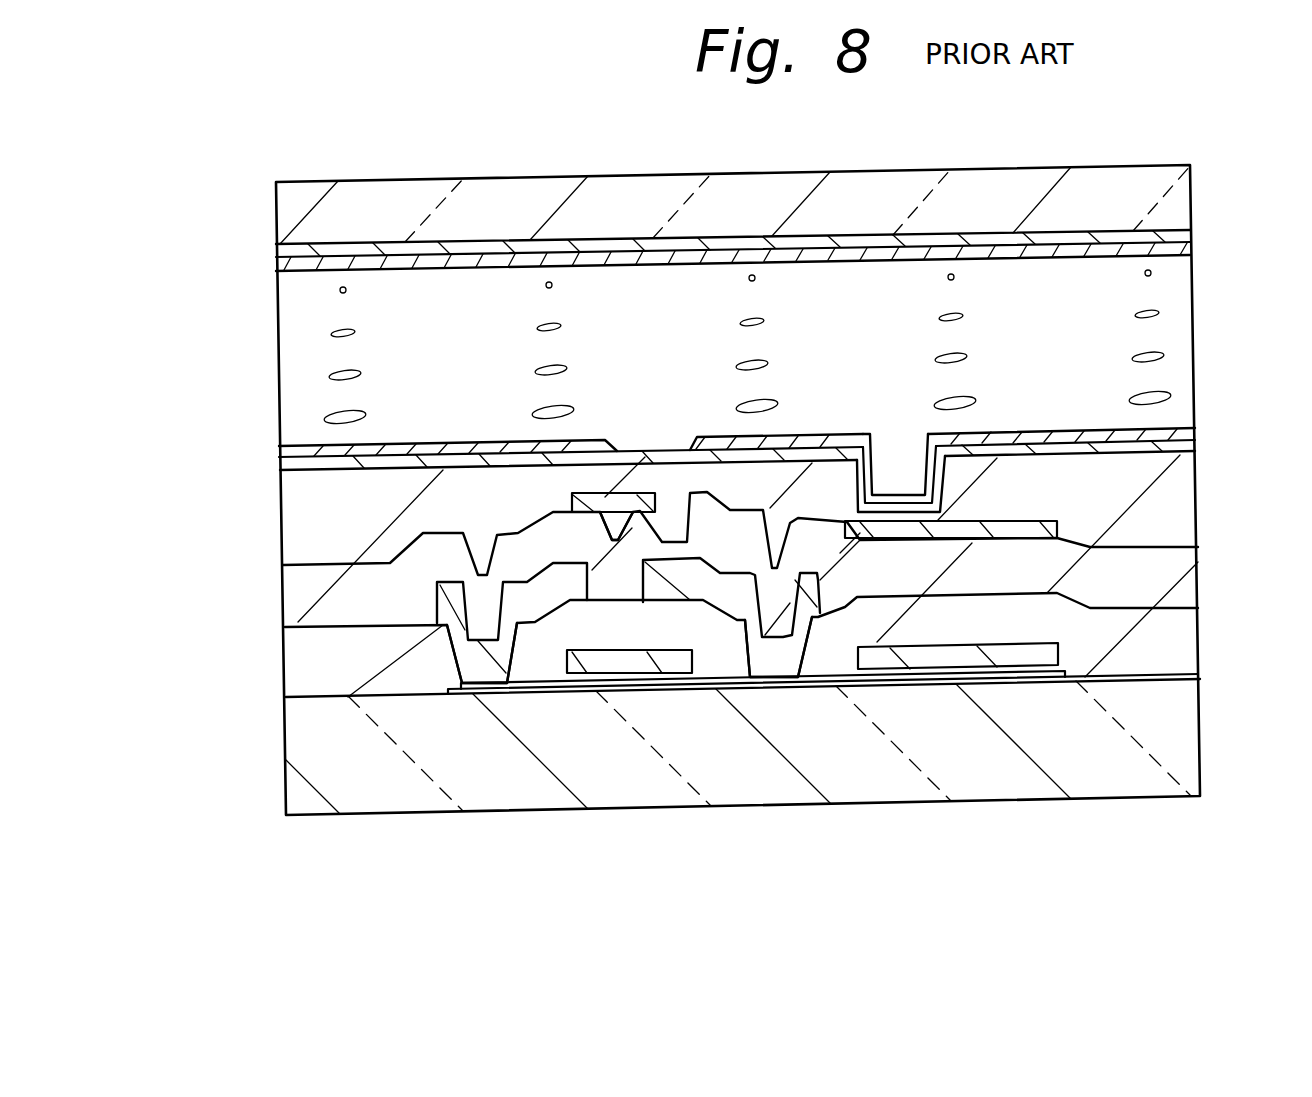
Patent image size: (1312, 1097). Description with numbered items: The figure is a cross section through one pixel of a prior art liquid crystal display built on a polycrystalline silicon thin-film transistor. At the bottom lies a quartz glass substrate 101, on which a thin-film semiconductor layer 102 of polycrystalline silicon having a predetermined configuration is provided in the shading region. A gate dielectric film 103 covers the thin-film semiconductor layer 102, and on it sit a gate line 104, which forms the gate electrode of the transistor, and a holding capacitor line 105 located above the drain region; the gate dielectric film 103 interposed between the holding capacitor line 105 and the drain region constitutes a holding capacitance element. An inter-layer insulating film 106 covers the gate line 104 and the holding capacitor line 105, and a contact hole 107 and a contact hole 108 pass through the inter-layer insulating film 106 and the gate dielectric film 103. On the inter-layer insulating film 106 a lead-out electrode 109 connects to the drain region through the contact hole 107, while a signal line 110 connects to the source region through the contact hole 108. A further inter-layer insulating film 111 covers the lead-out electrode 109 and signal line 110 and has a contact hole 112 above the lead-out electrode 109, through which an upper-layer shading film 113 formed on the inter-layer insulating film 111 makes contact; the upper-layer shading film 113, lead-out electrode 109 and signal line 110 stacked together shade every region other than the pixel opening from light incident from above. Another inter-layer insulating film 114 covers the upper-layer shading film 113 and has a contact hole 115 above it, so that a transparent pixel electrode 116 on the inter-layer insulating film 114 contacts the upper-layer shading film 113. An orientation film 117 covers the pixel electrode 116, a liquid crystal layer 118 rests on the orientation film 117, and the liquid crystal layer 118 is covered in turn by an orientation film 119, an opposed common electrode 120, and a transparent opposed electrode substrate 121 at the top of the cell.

The quartz glass substrate 101 is at (782, 746).
The thin-film semiconductor layer 102 is at (823, 763).
The gate dielectric film 103 is at (763, 764).
The gate line 104 is at (626, 752).
The holding capacitor line 105 is at (962, 745).
The inter-layer insulating film 106 is at (728, 629).
The contact hole 107 is at (753, 650).
The contact hole 108 is at (458, 658).
The lead-out electrode 109 is at (731, 721).
The signal line 110 is at (512, 723).
The inter-layer insulating film 111 is at (728, 587).
The contact hole 112 is at (642, 331).
The upper-layer shading film 113 is at (922, 515).
The inter-layer insulating film 114 is at (732, 538).
The contact hole 115 is at (912, 313).
The transparent pixel electrode 116 is at (732, 445).
The orientation film 117 is at (775, 412).
The liquid crystal layer 118 is at (795, 348).
The orientation film 119 is at (772, 250).
The opposed common electrode 120 is at (772, 225).
The transparent opposed electrode substrate 121 is at (418, 203).